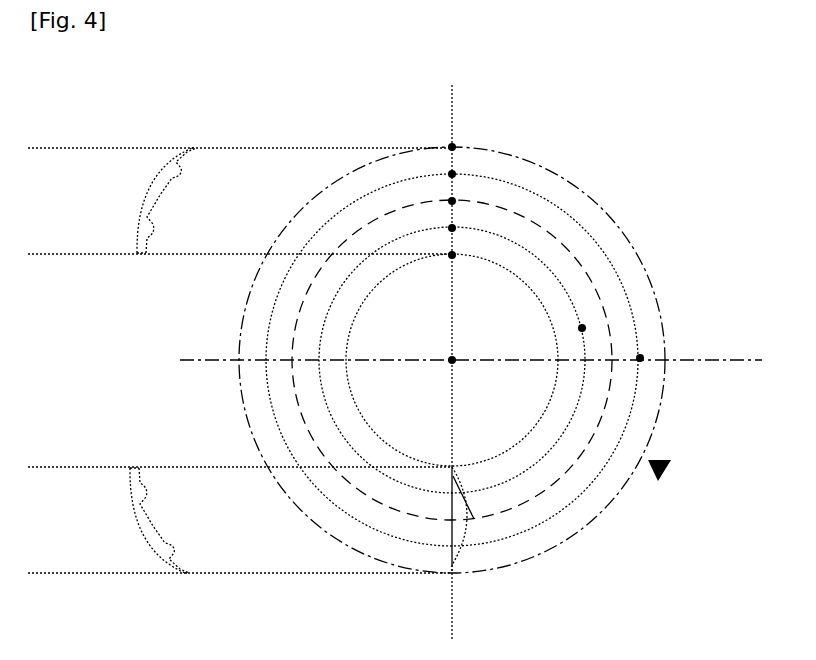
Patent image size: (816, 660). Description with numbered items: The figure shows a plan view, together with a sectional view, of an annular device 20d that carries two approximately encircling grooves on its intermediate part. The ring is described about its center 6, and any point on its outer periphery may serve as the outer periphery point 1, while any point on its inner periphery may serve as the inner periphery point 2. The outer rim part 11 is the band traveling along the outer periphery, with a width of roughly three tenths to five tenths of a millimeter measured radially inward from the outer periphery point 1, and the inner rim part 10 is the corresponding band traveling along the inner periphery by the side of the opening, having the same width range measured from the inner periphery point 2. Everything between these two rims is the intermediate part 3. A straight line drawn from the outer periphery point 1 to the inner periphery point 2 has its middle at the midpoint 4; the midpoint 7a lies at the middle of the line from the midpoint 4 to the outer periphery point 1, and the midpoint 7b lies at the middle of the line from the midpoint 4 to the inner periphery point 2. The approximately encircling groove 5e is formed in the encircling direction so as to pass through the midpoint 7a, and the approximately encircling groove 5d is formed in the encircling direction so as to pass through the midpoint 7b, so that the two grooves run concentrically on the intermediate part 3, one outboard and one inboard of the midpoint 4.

The outer periphery point 1 is at (452, 147).
The midpoint 7a is at (452, 174).
The midpoint 4 is at (452, 201).
The midpoint 7b is at (452, 228).
The inner periphery point 2 is at (452, 255).
The center 6 is at (452, 360).
The approximately encircling groove 5d is at (582, 328).
The approximately encircling groove 5e is at (640, 358).
The annular device 20d is at (752, 489).
The inner rim part 10 is at (453, 467).
The intermediate part 3 is at (474, 519).
The outer rim part 11 is at (452, 565).